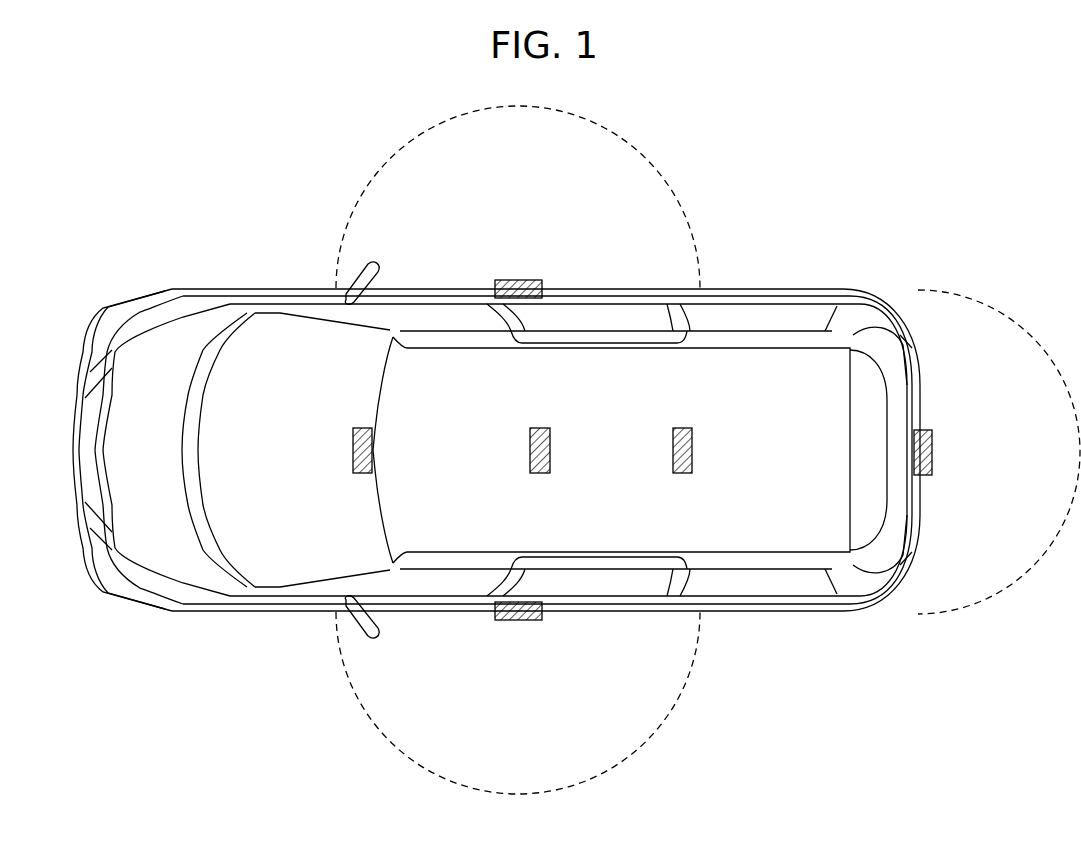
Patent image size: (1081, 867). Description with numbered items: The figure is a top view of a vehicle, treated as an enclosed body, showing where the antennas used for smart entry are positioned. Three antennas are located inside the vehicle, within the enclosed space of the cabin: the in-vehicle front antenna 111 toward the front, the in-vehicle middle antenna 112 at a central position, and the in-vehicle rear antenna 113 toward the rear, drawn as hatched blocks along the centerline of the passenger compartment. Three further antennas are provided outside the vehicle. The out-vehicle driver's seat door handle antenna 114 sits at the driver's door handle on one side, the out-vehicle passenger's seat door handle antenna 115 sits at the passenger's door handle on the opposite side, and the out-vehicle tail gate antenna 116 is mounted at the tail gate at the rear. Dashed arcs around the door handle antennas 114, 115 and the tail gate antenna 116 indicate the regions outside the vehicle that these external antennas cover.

The in-vehicle front antenna 111 is at (352, 452).
The in-vehicle middle antenna 112 is at (530, 452).
The in-vehicle rear antenna 113 is at (673, 452).
The out-vehicle driver's seat door handle antenna 114 is at (520, 278).
The out-vehicle passenger's seat door handle antenna 115 is at (521, 622).
The out-vehicle tail gate antenna 116 is at (934, 455).